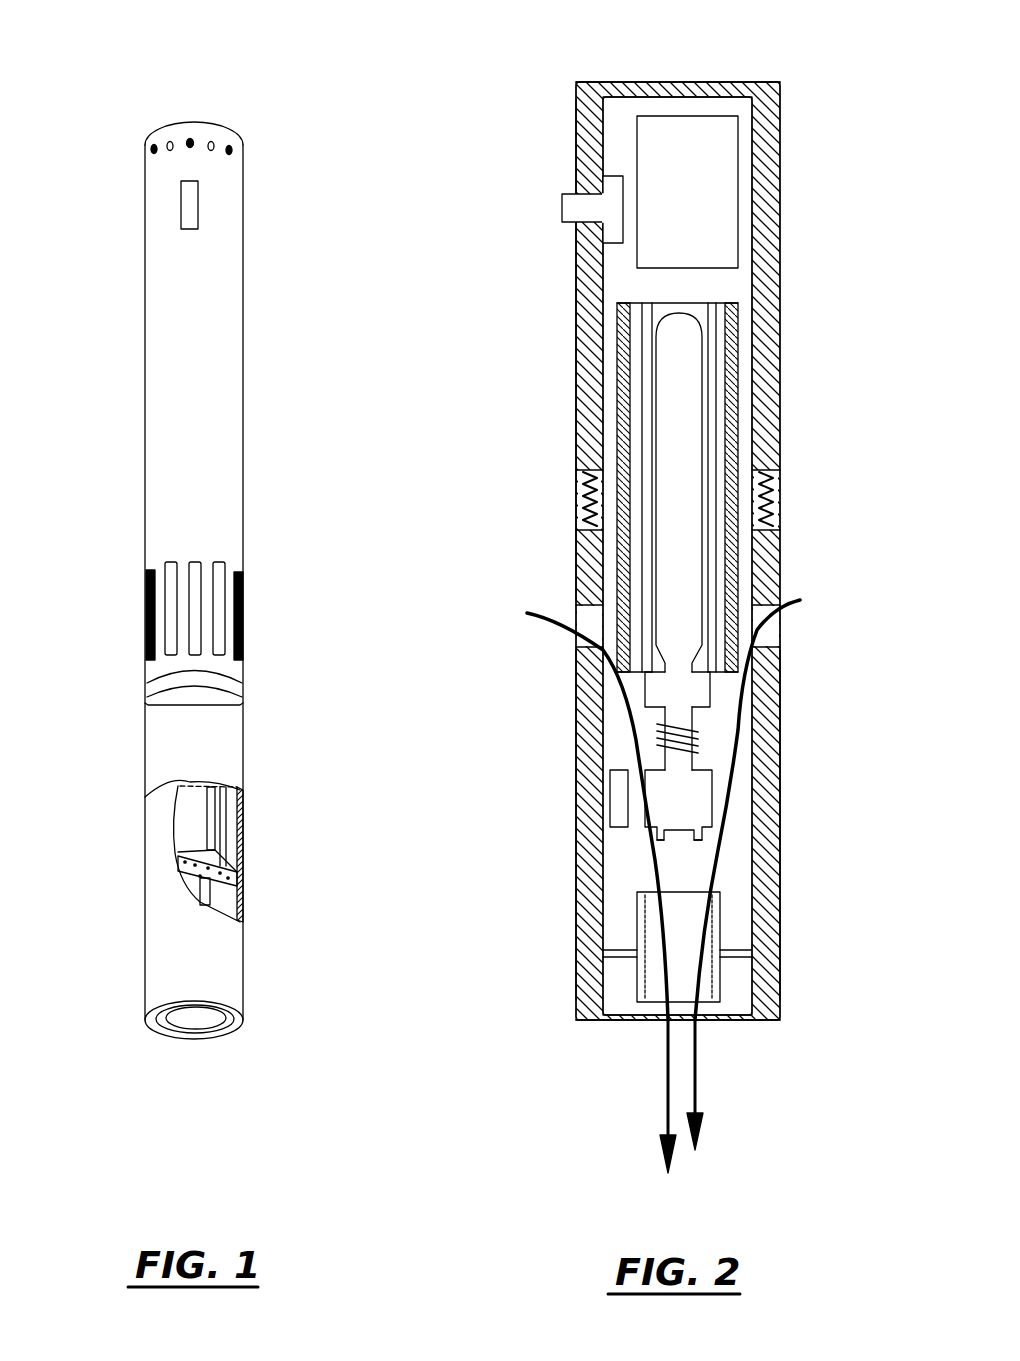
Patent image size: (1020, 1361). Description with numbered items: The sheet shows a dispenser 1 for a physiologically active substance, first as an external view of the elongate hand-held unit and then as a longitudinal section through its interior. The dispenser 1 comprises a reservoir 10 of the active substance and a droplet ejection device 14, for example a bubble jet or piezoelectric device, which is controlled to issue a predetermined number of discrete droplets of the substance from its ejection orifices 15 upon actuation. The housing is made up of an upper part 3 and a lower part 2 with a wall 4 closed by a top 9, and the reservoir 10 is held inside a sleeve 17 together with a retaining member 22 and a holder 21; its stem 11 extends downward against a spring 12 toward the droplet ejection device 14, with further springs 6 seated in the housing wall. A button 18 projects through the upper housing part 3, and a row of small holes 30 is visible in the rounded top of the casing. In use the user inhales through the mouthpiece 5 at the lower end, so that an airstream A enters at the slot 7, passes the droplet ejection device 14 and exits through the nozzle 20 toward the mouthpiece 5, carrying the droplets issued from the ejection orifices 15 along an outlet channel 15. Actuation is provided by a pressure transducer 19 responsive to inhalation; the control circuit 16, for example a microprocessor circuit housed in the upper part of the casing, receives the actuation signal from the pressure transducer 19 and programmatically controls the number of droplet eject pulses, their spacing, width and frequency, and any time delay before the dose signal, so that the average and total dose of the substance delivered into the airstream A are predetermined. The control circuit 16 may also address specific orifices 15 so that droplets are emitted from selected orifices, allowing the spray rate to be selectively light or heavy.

In FIG. 1, the dispenser 1 is at (343, 78).
In FIG. 2, the dispenser 1 is at (492, 488).
In FIG. 2, the lower housing part 2 is at (575, 837).
In FIG. 2, the upper housing part 3 is at (573, 272).
In FIG. 2, the housing wall 4 is at (770, 795).
In FIG. 1, the mouthpiece 5 is at (170, 965).
In FIG. 2, the mouthpiece 5 is at (770, 1005).
In FIG. 2, the spring 6 is at (772, 495).
In FIG. 1, the slot 7 is at (150, 604).
In FIG. 2, the slot 7 is at (770, 627).
In FIG. 2, the top wall 9 is at (706, 90).
In FIG. 2, the reservoir 10 is at (688, 368).
In FIG. 2, the valve stem 11 is at (686, 696).
In FIG. 2, the spring 12 is at (690, 772).
In FIG. 1, the droplet ejection device 14 is at (234, 823).
In FIG. 2, the droplet ejection device 14 is at (706, 808).
In FIG. 2, the ejection orifices 15 is at (655, 872).
In FIG. 1, the control circuit 16 is at (240, 888).
In FIG. 2, the control circuit 16 is at (722, 185).
In FIG. 2, the sleeve 17 is at (630, 375).
In FIG. 1, the actuating button 18 is at (195, 207).
In FIG. 2, the actuating button 18 is at (575, 207).
In FIG. 2, the pressure transducer 19 is at (626, 792).
In FIG. 2, the nozzle 20 is at (655, 976).
In FIG. 2, the holder 21 is at (652, 690).
In FIG. 2, the retaining member 22 is at (683, 300).
In FIG. 1, the holes 30 is at (197, 135).
In FIG. 2, the airstream A is at (663, 1160).